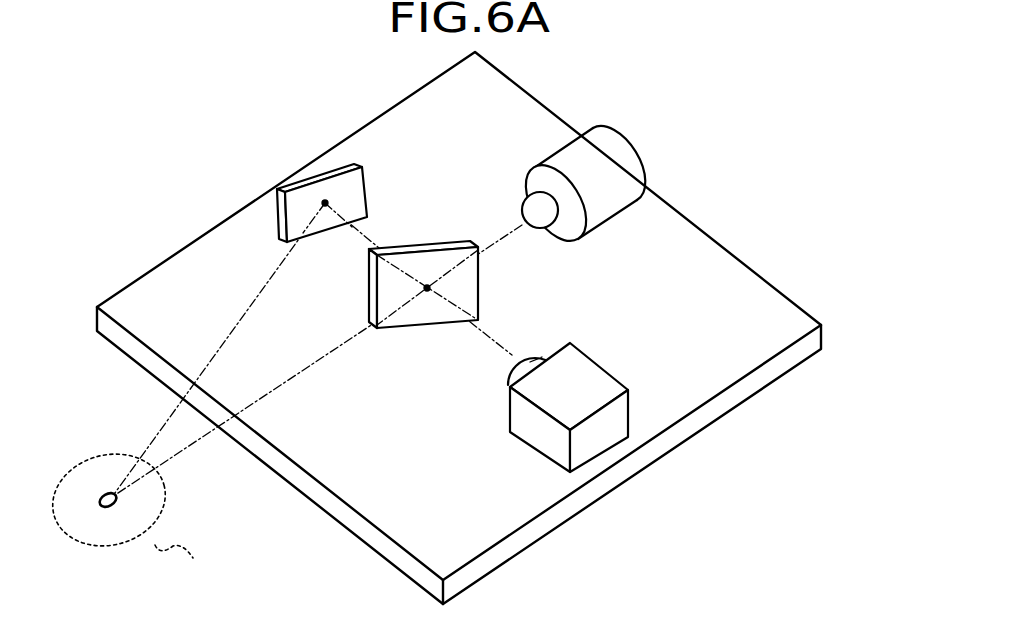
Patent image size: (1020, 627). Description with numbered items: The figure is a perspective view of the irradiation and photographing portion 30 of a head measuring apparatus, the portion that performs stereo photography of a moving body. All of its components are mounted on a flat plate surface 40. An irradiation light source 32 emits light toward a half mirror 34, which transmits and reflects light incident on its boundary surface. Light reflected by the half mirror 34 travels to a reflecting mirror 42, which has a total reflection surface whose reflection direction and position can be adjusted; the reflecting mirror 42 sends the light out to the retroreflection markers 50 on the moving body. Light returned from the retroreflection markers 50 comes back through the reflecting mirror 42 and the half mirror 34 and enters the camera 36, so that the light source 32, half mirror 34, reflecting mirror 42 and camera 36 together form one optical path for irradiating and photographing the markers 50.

The irradiation and photographing portion 30 is at (229, 128).
The irradiation light source 32 is at (630, 168).
The half mirror 34 is at (472, 297).
The camera 36 is at (587, 372).
The flat plate surface 40 is at (708, 246).
The reflecting mirror 42 is at (352, 183).
The retroreflection markers 50 is at (118, 500).